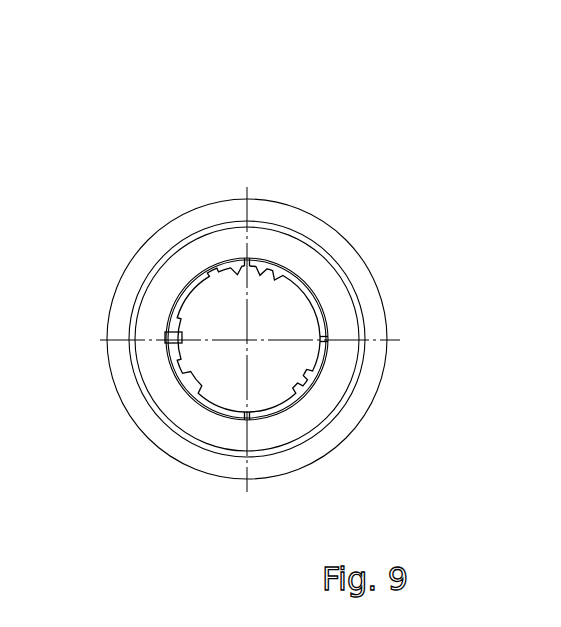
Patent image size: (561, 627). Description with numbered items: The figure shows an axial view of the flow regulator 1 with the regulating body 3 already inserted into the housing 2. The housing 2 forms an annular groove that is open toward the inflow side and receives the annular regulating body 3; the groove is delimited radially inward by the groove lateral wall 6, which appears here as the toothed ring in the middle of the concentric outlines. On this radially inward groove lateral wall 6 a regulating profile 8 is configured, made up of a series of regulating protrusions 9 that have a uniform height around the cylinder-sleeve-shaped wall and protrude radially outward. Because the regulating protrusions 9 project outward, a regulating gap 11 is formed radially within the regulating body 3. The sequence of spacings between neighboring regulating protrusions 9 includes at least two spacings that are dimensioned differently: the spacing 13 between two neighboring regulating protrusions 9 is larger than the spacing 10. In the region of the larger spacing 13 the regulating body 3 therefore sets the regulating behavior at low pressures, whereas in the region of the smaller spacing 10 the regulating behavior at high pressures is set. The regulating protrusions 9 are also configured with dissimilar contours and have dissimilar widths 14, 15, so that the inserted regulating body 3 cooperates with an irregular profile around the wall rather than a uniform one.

The flow regulator 1 is at (216, 135).
The housing 2 is at (305, 225).
The regulating body 3 is at (157, 302).
The groove lateral wall 6 is at (283, 413).
The regulating profile 8 is at (264, 243).
The regulating protrusion 9 is at (251, 257).
The spacing 10 is at (235, 245).
The regulating gap 11 is at (179, 288).
The spacing 13 is at (180, 404).
The width 14 is at (166, 364).
The width 15 is at (264, 433).